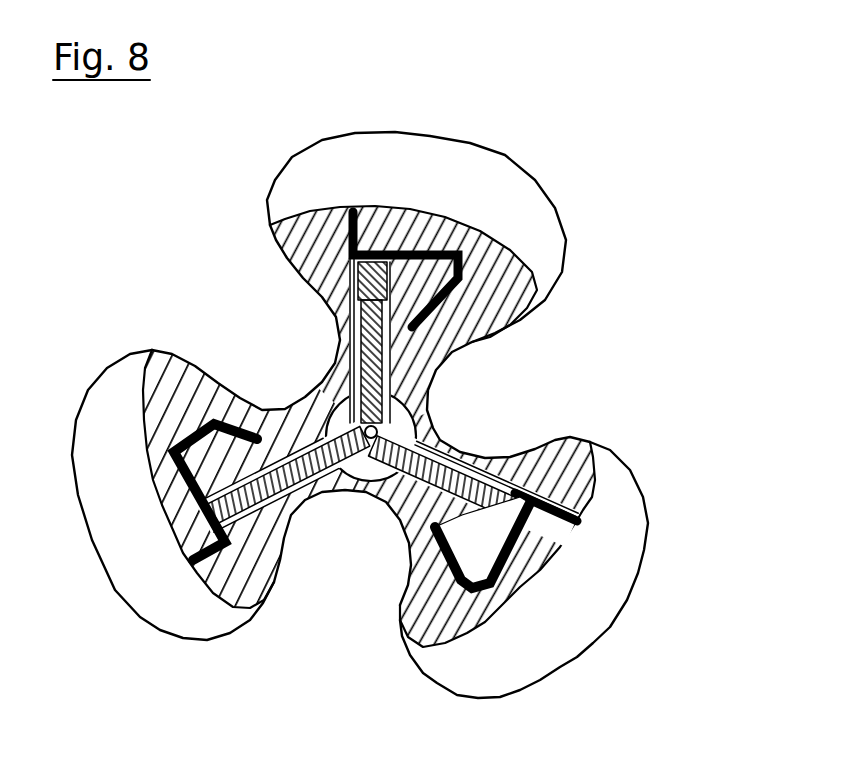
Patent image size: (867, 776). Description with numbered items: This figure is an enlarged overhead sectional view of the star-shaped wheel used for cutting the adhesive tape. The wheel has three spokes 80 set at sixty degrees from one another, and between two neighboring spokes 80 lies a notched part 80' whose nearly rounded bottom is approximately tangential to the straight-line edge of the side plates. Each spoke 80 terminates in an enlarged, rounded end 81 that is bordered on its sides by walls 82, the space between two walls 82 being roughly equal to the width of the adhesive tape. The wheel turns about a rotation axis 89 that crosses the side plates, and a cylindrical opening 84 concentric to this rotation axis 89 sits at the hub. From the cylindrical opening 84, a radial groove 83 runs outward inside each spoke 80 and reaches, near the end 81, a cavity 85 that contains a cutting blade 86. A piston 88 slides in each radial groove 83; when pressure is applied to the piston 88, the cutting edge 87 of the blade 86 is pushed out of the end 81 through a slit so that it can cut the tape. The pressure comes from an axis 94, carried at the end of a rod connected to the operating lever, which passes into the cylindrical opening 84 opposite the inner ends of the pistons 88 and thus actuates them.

The spoke 80 is at (396, 426).
The notched part 80' is at (173, 442).
The end 81 is at (466, 222).
The wall 82 is at (397, 160).
The radial groove 83 is at (356, 337).
The cylindrical opening 84 is at (400, 408).
The cavity 85 is at (542, 537).
The cutting blade 86 is at (533, 565).
The cutting edge 87 is at (574, 526).
The piston 88 is at (294, 490).
The rotation axis 89 is at (440, 440).
The axis 94 is at (371, 441).